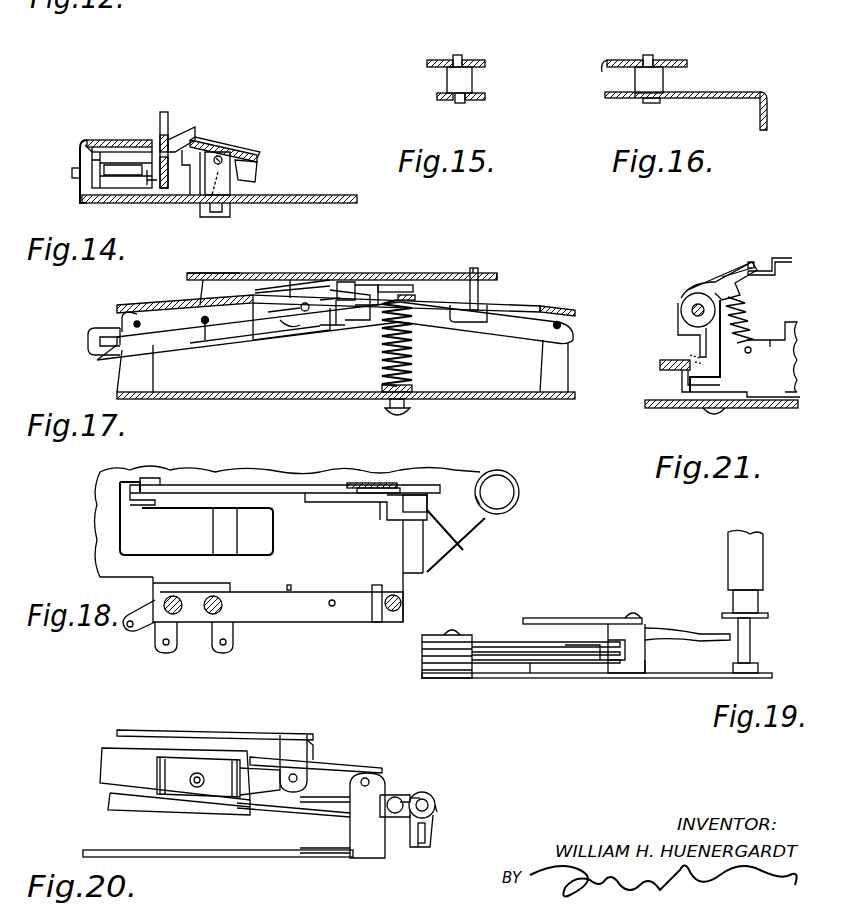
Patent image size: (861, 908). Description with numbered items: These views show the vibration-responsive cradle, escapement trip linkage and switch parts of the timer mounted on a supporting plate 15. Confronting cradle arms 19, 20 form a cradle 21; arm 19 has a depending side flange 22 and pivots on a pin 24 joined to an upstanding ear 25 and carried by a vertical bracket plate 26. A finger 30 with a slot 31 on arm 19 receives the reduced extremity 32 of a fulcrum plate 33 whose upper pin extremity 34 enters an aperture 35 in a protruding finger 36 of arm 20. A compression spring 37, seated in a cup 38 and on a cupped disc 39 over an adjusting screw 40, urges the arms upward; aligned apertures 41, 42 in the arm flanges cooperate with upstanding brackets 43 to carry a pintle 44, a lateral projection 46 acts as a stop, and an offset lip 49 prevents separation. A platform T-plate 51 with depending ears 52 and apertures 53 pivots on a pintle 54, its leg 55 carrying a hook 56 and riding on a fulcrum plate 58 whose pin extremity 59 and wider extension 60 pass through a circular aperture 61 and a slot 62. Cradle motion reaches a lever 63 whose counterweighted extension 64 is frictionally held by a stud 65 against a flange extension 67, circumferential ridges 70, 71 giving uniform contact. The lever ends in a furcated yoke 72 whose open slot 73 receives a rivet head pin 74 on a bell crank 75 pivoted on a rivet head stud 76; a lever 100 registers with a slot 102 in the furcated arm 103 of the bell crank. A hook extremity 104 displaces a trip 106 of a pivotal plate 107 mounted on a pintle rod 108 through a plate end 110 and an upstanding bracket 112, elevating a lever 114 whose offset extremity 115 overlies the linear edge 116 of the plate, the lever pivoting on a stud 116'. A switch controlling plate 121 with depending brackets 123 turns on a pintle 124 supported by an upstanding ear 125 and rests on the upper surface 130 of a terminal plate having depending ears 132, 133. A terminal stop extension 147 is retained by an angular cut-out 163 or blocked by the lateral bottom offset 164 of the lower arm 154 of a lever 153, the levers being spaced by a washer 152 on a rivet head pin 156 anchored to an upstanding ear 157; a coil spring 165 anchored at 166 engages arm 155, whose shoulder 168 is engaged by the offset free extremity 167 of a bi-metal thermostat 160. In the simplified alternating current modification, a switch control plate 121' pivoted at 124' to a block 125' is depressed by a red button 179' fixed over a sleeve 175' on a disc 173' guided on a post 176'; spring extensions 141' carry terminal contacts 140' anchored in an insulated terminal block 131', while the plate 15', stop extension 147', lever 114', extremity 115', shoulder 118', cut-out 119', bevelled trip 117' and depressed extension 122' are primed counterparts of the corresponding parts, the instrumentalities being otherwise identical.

In FIG. 14, the supporting plate 15 is at (233, 188).
In FIG. 17, the supporting plate 15 is at (352, 410).
In FIG. 21, the supporting plate 15 is at (721, 415).
In FIG. 20, the supporting plate 15 is at (218, 870).
In FIG. 16, the cradle arm 19 is at (725, 92).
In FIG. 17, the cradle arm 19 is at (503, 298).
In FIG. 17, the cradle arm 20 is at (181, 296).
In FIG. 20, the cradle arm 20 is at (345, 762).
In FIG. 17, the cradle 21 is at (188, 275).
In FIG. 17, the depending side flange 22 is at (515, 318).
In FIG. 17, the pin 24 is at (563, 323).
In FIG. 17, the upstanding ear 25 is at (560, 365).
In FIG. 21, the vertical bracket plate 26 is at (772, 337).
In FIG. 15, the finger 30 is at (478, 100).
In FIG. 17, the finger 30 is at (333, 325).
In FIG. 15, the slot 31 is at (450, 100).
In FIG. 15, the reduced extremity 32 is at (460, 103).
In FIG. 15, the fulcrum plate 33 is at (462, 80).
In FIG. 17, the fulcrum plate 33 is at (357, 288).
In FIG. 15, the reduced upper pin extremity 34 is at (458, 55).
In FIG. 15, the aperture 35 is at (468, 60).
In FIG. 15, the protruding finger 36 is at (450, 60).
In FIG. 17, the protruding finger 36 is at (337, 283).
In FIG. 17, the compression spring 37 is at (412, 345).
In FIG. 17, the cup 38 is at (397, 287).
In FIG. 17, the cupped disc 39 is at (410, 385).
In FIG. 16, the screw 40 is at (767, 105).
In FIG. 17, the screw 40 is at (162, 322).
In FIG. 17, the aligned apertures 41 is at (137, 321).
In FIG. 17, the aligned apertures 42 is at (203, 320).
In FIG. 17, the upstanding brackets 43 is at (127, 373).
In FIG. 20, the upstanding brackets 43 is at (368, 828).
In FIG. 17, the pintle 44 is at (127, 328).
In FIG. 20, the pintle 44 is at (366, 778).
In FIG. 17, the projection 46 is at (410, 295).
In FIG. 17, the downwardly offset lip 49 is at (335, 320).
In FIG. 16, the platform T-plate 51 is at (607, 62).
In FIG. 17, the platform T-plate 51 is at (245, 272).
In FIG. 20, the platform T-plate 51 is at (220, 730).
In FIG. 17, the depending ears 52 is at (203, 287).
In FIG. 20, the depending ears 52 is at (290, 750).
In FIG. 20, the aligned apertures 53 is at (310, 760).
In FIG. 17, the pintle 54 is at (207, 323).
In FIG. 20, the pintle 54 is at (293, 782).
In FIG. 16, the leg 55 is at (603, 70).
In FIG. 17, the leg 55 is at (485, 273).
In FIG. 17, the depending hook 56 is at (465, 320).
In FIG. 16, the fulcrum plate 58 is at (666, 80).
In FIG. 17, the fulcrum plate 58 is at (480, 290).
In FIG. 16, the upper pin extremity 59 is at (648, 55).
In FIG. 16, the lower extension 60 is at (653, 103).
In FIG. 16, the circular aperture 61 is at (660, 60).
In FIG. 16, the slot 62 is at (640, 100).
In FIG. 17, the lever 63 is at (198, 343).
In FIG. 20, the lever 63 is at (263, 808).
In FIG. 20, the counterweighted extension 64 is at (108, 760).
In FIG. 17, the stud 65 is at (300, 303).
In FIG. 20, the stud 65 is at (197, 773).
In FIG. 17, the side flange extension 67 is at (267, 310).
In FIG. 20, the side flange extension 67 is at (132, 800).
In FIG. 20, the circumferential ridge 70 is at (167, 758).
In FIG. 20, the circumferential ridge 71 is at (233, 807).
In FIG. 17, the furcated yoke 72 is at (113, 332).
In FIG. 20, the furcated yoke 72 is at (410, 798).
In FIG. 17, the open slot 73 is at (92, 338).
In FIG. 20, the open slot 73 is at (415, 803).
In FIG. 20, the rivet head pin 74 is at (396, 797).
In FIG. 20, the bell crank 75 is at (443, 800).
In FIG. 20, the rivet head stud 76 is at (437, 808).
In FIG. 20, the lever 100 is at (420, 843).
In FIG. 20, the slot 102 is at (428, 832).
In FIG. 20, the furcated arm 103 is at (438, 823).
In FIG. 14, the hook extremity 104 is at (217, 213).
In FIG. 14, the trip 106 is at (198, 210).
In FIG. 14, the pivotal plate 107 is at (253, 163).
In FIG. 14, the pintle rod 108 is at (235, 143).
In FIG. 14, the depending plate end 110 is at (247, 168).
In FIG. 14, the upstanding bracket 112 is at (228, 182).
In FIG. 14, the lever 114 is at (160, 138).
In FIG. 14, the laterally offset extremity 115 is at (189, 120).
In FIG. 14, the linear edge 116 is at (210, 141).
In FIG. 14, the switch controlling plate 121 is at (122, 130).
In FIG. 18, the switch controlling plate 121 is at (263, 595).
In FIG. 14, the depending brackets 123 is at (85, 145).
In FIG. 14, the pintle 124 is at (102, 141).
In FIG. 14, the upstanding ear 125 is at (58, 172).
In FIG. 14, the upper surface 130 is at (110, 152).
In FIG. 14, the depending ear 132 is at (90, 173).
In FIG. 14, the depending ear 133 is at (147, 180).
In FIG. 21, the terminal stop extension 147 is at (652, 372).
In FIG. 21, the washer 152 is at (690, 312).
In FIG. 21, the lever 153 is at (698, 282).
In FIG. 21, the lower arm 154 is at (720, 373).
In FIG. 21, the lever arm 155 is at (723, 276).
In FIG. 21, the rivet head pin 156 is at (693, 300).
In FIG. 21, the upstanding ear 157 is at (678, 325).
In FIG. 21, the bi-metal thermostat 160 is at (770, 262).
In FIG. 21, the angular cut-out 163 is at (692, 357).
In FIG. 21, the lateral bottom offset 164 is at (685, 378).
In FIG. 21, the coil spring 165 is at (740, 310).
In FIG. 21, the spring anchorage 166 is at (751, 352).
In FIG. 21, the downwardly offset free extremity 167 is at (760, 265).
In FIG. 21, the shoulder 168 is at (748, 263).
In FIG. 18, the frame 147' is at (270, 521).
In FIG. 18, the arm 115' is at (285, 475).
In FIG. 18, the post 114' is at (387, 469).
In FIG. 18, the stud 116' is at (389, 483).
In FIG. 18, the block 119' is at (384, 513).
In FIG. 18, the stub 117' is at (442, 513).
In FIG. 18, the red button 179' is at (528, 488).
In FIG. 19, the red button 179' is at (765, 548).
In FIG. 18, the disc 173' is at (524, 511).
In FIG. 19, the disc 173' is at (766, 630).
In FIG. 18, the brace 118' is at (465, 541).
In FIG. 18, the column 122' is at (443, 571).
In FIG. 18, the pivot 124' is at (373, 613).
In FIG. 19, the pivot 124' is at (650, 598).
In FIG. 18, the block 125' is at (366, 618).
In FIG. 19, the block 125' is at (669, 648).
In FIG. 19, the base plate 15' is at (597, 692).
In FIG. 19, the insulated terminal block 131' is at (424, 655).
In FIG. 19, the terminal contacts 140' is at (546, 654).
In FIG. 19, the spring extensions 141' is at (550, 683).
In FIG. 19, the switch control plate 121' is at (582, 603).
In FIG. 19, the sleeve 175' is at (724, 588).
In FIG. 19, the post 176' is at (772, 640).